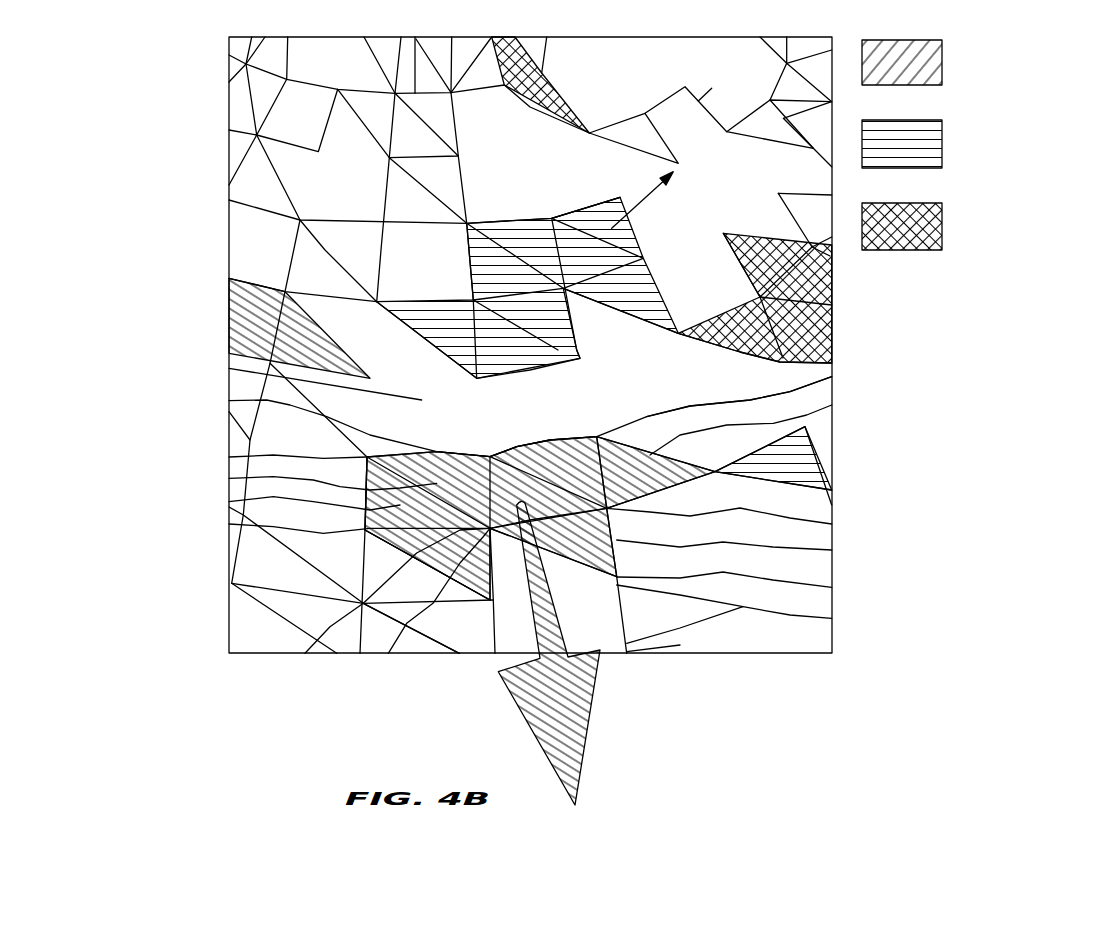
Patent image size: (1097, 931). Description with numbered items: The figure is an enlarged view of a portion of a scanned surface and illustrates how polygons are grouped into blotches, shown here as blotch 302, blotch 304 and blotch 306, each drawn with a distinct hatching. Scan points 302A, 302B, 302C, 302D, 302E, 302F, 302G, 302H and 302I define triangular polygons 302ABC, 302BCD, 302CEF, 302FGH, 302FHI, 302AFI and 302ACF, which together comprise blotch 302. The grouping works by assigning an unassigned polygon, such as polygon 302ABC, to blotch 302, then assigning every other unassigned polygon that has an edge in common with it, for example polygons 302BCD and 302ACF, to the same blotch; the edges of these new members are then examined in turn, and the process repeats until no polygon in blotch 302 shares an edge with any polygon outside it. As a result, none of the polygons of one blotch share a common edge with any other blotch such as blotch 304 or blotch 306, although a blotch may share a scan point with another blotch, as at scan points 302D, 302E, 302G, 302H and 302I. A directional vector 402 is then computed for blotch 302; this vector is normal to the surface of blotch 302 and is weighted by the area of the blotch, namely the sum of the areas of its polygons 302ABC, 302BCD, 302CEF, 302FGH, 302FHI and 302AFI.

The blotch 302 is at (638, 320).
The blotch 304 is at (712, 312).
The blotch 306 is at (769, 200).
The scan point 302A is at (229, 401).
The scan point 302B is at (832, 377).
The scan point 302C is at (832, 550).
The scan point 302D is at (820, 443).
The scan point 302E is at (832, 618).
The scan point 302F is at (388, 653).
The scan point 302G is at (459, 653).
The scan point 302H is at (229, 524).
The scan point 302I is at (229, 457).
The polygon 302ABC is at (832, 524).
The polygon 302ACF is at (522, 452).
The polygon 302AFI is at (229, 478).
The polygon 302BCD is at (832, 405).
The polygon 302CEF is at (832, 587).
The polygon 302FGH is at (305, 653).
The polygon 302FHI is at (229, 502).
The directional vector 402 is at (583, 758).